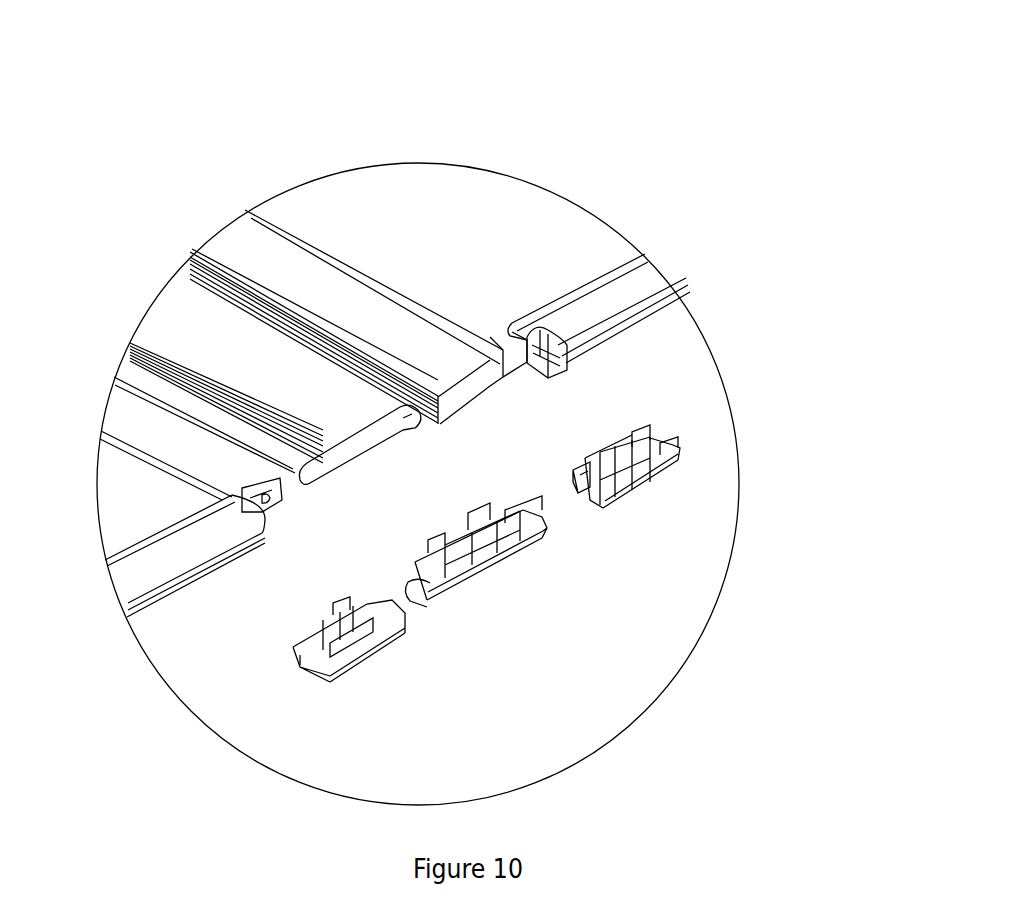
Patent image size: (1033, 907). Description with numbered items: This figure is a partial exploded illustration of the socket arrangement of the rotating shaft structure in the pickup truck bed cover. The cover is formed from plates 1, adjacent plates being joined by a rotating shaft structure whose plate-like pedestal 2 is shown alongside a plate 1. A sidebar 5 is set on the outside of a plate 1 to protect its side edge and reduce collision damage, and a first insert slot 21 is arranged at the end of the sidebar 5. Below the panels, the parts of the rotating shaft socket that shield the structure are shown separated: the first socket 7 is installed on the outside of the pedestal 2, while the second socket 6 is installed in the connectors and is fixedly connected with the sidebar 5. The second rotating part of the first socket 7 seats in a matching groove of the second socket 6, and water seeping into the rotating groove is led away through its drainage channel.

The plate 1 is at (403, 200).
The pedestal 2 is at (238, 350).
The sidebar 5 is at (602, 307).
The first insert slot 21 is at (570, 366).
The first socket 7 is at (645, 487).
The second socket 6 is at (530, 548).